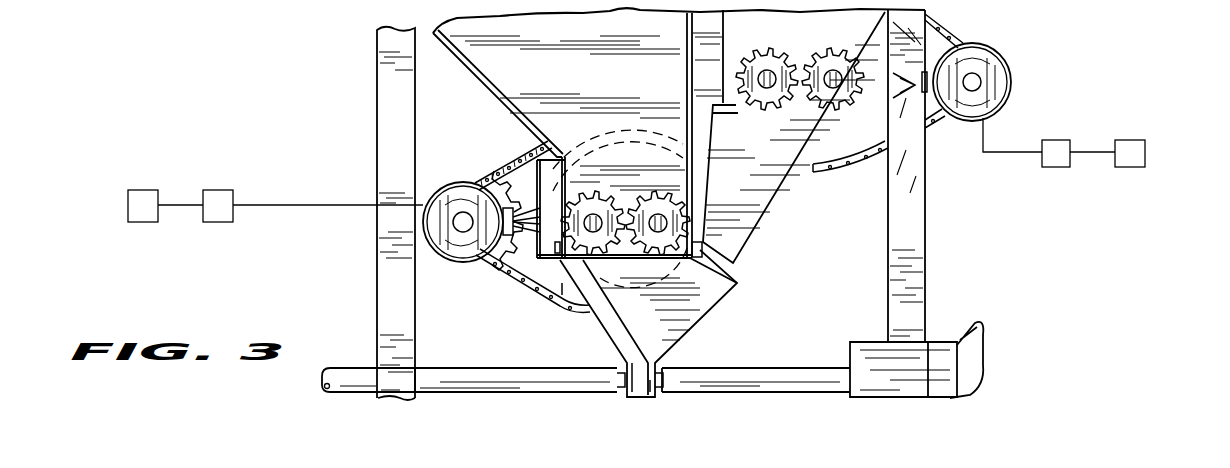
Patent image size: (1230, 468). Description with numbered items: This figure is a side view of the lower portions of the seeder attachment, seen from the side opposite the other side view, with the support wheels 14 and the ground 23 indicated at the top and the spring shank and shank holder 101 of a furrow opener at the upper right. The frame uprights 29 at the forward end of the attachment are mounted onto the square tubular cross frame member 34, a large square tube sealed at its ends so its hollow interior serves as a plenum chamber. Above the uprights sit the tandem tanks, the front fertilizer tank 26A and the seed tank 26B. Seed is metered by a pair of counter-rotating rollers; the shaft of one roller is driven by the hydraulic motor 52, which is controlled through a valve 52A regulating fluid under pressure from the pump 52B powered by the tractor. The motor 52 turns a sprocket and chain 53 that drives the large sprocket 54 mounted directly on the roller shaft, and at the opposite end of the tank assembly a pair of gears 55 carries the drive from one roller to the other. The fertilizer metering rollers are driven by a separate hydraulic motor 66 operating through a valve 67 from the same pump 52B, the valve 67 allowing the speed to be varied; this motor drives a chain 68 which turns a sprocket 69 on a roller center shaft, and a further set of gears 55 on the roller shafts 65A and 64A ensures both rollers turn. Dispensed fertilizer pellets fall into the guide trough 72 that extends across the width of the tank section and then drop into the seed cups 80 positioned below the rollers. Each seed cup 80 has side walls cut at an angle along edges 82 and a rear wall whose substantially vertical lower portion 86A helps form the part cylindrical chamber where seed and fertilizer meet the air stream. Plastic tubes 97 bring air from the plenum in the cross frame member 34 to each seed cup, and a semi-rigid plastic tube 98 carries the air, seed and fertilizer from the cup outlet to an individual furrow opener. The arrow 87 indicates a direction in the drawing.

The ground 23 is at (58, 0).
The support wheels 14 is at (258, 0).
The spring shank and shank holder 101 is at (1075, 0).
The frame uprights 29 is at (387, 300).
The front fertilizer tank 26A is at (747, 36).
The seed tank 26B is at (503, 62).
The roller shaft 64A is at (755, 78).
The roller shaft 65A is at (851, 70).
The gears 55 is at (668, 178).
The guide trough 72 is at (777, 208).
The hydraulic motor 52 is at (452, 257).
The sprocket and chain 53 is at (527, 295).
The large sprocket 54 is at (560, 308).
The valve 52A is at (143, 190).
The pump 52B is at (228, 222).
The hydraulic motor 66 is at (1005, 80).
The valve 67 is at (1060, 140).
The chain 68 is at (940, 130).
The sprocket 69 is at (845, 155).
The seed cups 80 is at (682, 313).
The angled edges 82 is at (735, 282).
The lower wall portion 86A is at (620, 367).
The direction of flow 87 is at (741, 270).
The plastic tubes 97 is at (817, 382).
The semi-rigid plastic tube 98 is at (355, 378).
The square tubular cross frame member 34 is at (943, 372).